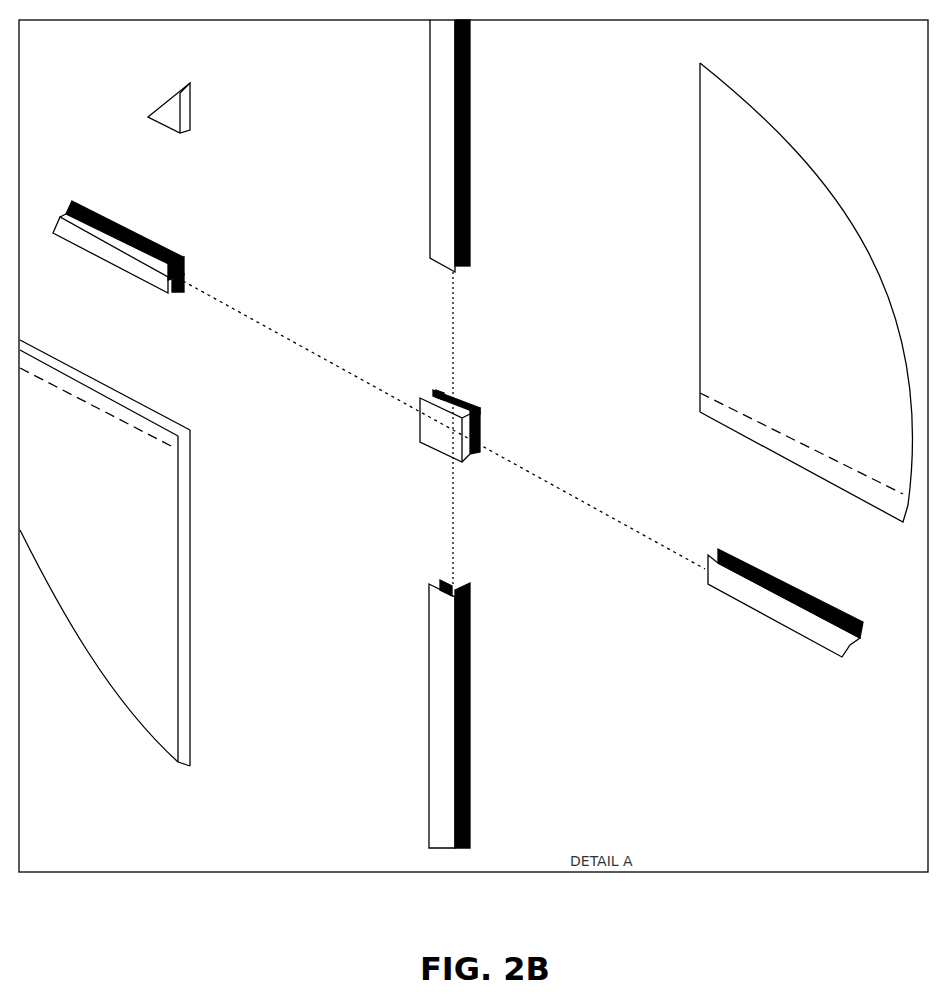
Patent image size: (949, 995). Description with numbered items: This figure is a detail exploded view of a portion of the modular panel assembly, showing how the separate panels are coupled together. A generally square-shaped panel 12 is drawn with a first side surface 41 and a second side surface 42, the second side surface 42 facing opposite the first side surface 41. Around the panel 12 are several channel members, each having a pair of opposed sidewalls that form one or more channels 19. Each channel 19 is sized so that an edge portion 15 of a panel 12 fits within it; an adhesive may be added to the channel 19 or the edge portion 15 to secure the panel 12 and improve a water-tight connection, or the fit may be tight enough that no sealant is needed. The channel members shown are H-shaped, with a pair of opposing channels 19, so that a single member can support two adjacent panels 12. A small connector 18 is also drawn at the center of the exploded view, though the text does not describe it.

The panel 12 is at (730, 292).
The edge portion 15 is at (722, 427).
The center bracket 18 is at (492, 408).
The channel 19 is at (174, 255).
The first side surface 41 is at (199, 553).
The second side surface 42 is at (190, 553).